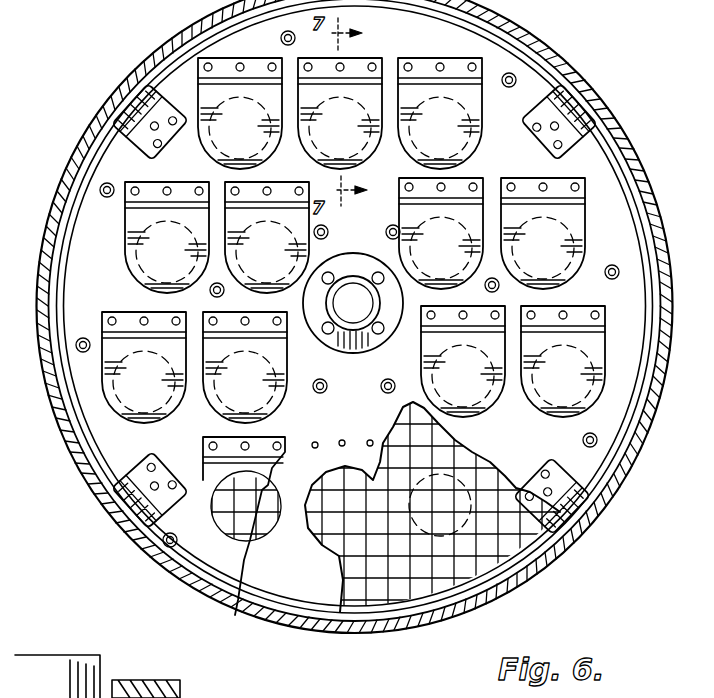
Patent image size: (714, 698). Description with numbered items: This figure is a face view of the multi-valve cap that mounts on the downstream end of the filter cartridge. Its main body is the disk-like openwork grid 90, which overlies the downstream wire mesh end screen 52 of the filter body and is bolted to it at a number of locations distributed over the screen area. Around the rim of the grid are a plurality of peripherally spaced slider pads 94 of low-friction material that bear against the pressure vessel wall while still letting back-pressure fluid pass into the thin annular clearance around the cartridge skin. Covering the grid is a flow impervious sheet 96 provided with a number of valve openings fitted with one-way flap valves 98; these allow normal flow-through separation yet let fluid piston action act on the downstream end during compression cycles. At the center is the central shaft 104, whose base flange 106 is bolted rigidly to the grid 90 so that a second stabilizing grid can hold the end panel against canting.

The wire mesh grid 52 is at (545, 556).
The openwork grid 90 is at (438, 568).
The slider pads 94 is at (122, 130).
The flow impervious sheet 96 is at (290, 565).
The one-way flap valves 98 is at (335, 149).
The central shaft 104 is at (348, 262).
The base flange 106 is at (333, 337).